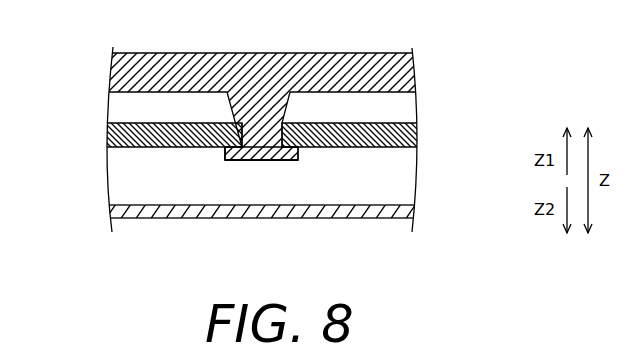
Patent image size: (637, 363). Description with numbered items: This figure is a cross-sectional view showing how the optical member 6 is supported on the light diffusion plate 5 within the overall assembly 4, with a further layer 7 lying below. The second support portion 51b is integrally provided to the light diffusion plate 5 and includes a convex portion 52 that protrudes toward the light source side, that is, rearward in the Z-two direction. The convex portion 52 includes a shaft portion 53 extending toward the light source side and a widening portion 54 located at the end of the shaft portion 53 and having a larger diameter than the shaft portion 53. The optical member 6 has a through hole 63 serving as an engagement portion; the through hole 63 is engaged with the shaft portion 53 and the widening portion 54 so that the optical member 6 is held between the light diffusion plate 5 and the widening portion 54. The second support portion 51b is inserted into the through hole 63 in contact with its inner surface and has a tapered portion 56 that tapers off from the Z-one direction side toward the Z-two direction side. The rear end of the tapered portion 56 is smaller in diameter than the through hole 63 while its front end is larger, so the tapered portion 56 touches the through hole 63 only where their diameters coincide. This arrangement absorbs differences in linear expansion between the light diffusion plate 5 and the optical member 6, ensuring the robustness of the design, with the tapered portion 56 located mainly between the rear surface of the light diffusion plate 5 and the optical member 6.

The laminated body 4 is at (483, 55).
The light diffusion plate 5 is at (413, 70).
The optical member 6 is at (413, 133).
The base layer 7 is at (402, 211).
The tapered portion 56 is at (228, 110).
The through hole 63 is at (286, 111).
The shaft portion 53 is at (223, 148).
The widening portion 54 is at (225, 156).
The second support portion 51b is at (306, 151).
The convex portion 52 is at (258, 162).